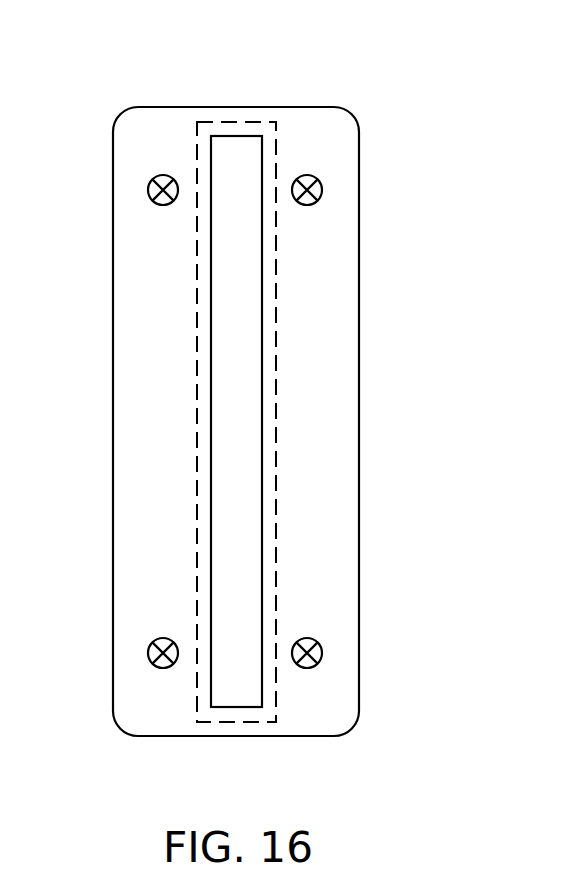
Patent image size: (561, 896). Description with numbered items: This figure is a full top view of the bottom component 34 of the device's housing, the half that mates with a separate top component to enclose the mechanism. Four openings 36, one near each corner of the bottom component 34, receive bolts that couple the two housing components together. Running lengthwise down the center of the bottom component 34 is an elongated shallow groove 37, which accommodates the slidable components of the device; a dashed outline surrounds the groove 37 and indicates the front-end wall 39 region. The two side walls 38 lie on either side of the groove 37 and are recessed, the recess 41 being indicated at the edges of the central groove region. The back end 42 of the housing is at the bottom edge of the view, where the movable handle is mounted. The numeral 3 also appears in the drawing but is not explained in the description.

The fastener 3 is at (163, 175).
The bottom component 34 is at (377, 277).
The openings 36 is at (307, 175).
The elongated shallow groove 37 is at (240, 418).
The side walls 38 is at (145, 474).
The front-end wall 39 is at (217, 121).
The recess 41 is at (207, 344).
The back end 42 is at (230, 736).